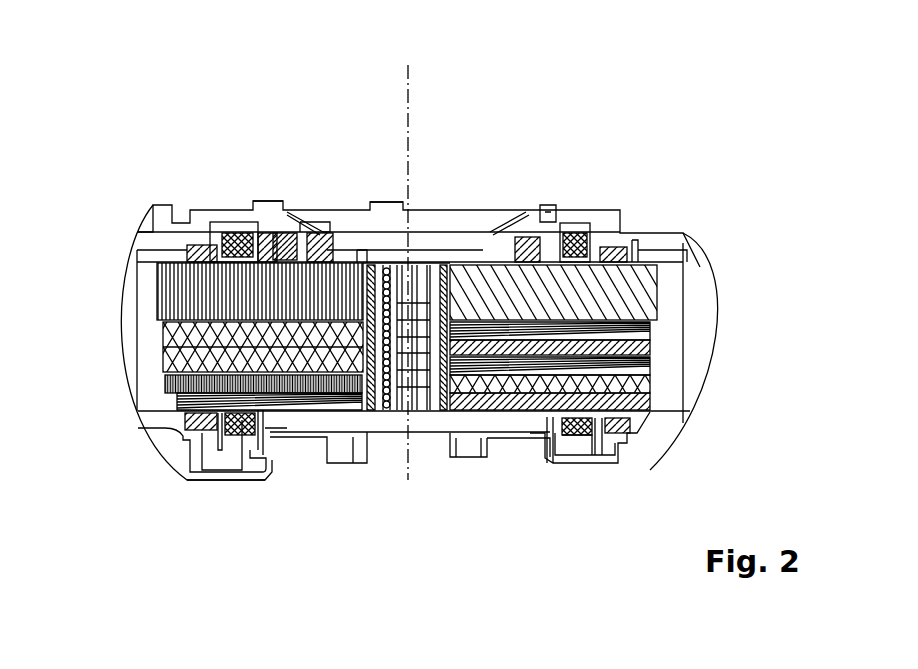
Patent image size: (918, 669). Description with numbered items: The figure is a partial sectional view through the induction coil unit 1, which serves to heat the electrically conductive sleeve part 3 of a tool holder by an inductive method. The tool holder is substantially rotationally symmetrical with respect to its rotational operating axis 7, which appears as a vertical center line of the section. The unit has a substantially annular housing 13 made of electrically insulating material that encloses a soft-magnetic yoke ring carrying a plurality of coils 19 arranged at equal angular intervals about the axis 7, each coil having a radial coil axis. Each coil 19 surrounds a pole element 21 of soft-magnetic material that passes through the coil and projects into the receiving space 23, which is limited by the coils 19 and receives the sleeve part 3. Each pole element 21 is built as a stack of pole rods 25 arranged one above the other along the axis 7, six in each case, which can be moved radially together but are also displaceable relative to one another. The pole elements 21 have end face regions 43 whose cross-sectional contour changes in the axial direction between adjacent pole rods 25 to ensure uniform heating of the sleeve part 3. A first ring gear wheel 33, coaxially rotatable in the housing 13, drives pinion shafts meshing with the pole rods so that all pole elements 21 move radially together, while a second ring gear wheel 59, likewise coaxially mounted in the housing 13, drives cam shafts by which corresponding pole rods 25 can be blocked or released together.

The induction coil unit 1 is at (672, 115).
The sleeve part 3 is at (388, 412).
The rotational operating axis 7 is at (410, 118).
The housing 13 is at (655, 232).
The coils 19 is at (240, 232).
The pole element 21 is at (388, 262).
The receiving space 23 is at (444, 265).
The pole rods 25 is at (642, 287).
The first ring gear wheel 33 is at (316, 222).
The end face regions 43 is at (424, 264).
The second ring gear wheel 59 is at (288, 212).